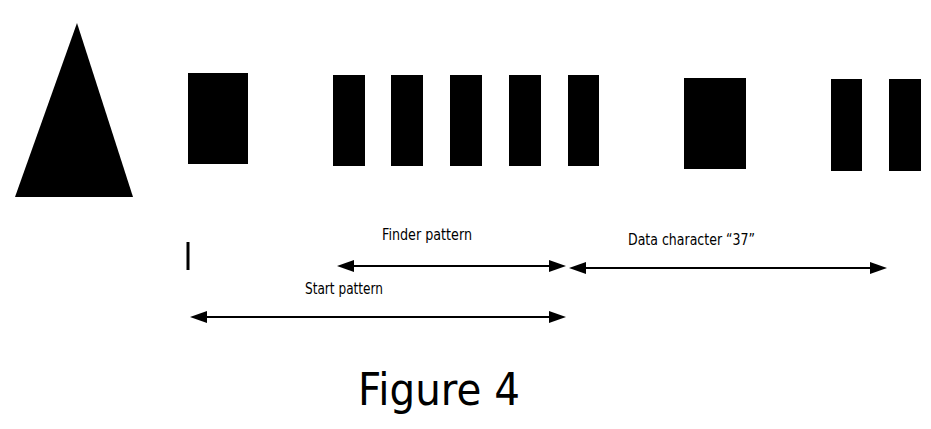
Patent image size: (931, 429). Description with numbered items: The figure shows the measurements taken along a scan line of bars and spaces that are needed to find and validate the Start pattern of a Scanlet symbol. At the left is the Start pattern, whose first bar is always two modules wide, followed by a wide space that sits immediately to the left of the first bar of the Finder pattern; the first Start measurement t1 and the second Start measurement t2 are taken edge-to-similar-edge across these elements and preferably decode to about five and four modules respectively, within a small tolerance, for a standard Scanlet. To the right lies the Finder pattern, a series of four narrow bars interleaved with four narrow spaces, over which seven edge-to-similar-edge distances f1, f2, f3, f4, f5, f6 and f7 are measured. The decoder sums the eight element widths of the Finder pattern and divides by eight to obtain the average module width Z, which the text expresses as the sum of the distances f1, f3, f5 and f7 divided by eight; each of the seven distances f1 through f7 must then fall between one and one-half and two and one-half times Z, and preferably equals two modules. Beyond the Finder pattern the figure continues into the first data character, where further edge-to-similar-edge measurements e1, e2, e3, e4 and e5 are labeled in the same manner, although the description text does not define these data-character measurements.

The first Start pattern measurement t1 is at (246, 209).
The second Start pattern measurement t2 is at (334, 37).
The first Finder pattern edge-to-similar-edge distance f1 is at (362, 210).
The second Finder pattern edge-to-similar-edge distance f2 is at (393, 37).
The third Finder pattern edge-to-similar-edge distance f3 is at (421, 210).
The fourth Finder pattern edge-to-similar-edge distance f4 is at (452, 37).
The fifth Finder pattern edge-to-similar-edge distance f5 is at (480, 210).
The sixth Finder pattern edge-to-similar-edge distance f6 is at (511, 37).
The seventh Finder pattern edge-to-similar-edge distance f7 is at (539, 210).
The data character edge-to-edge measurement 1 e1 is at (685, 40).
The data character edge-to-edge measurement 2 e2 is at (743, 182).
The data character edge-to-edge measurement 3 e3 is at (832, 72).
The data character edge-to-edge measurement 4 e4 is at (860, 180).
The data character edge-to-edge measurement 5 e5 is at (890, 72).